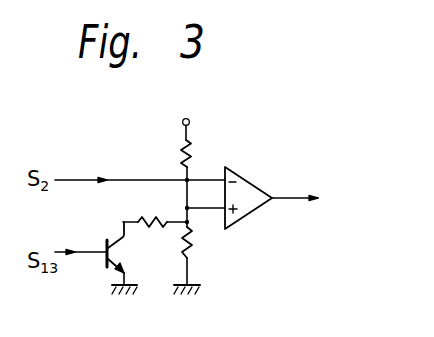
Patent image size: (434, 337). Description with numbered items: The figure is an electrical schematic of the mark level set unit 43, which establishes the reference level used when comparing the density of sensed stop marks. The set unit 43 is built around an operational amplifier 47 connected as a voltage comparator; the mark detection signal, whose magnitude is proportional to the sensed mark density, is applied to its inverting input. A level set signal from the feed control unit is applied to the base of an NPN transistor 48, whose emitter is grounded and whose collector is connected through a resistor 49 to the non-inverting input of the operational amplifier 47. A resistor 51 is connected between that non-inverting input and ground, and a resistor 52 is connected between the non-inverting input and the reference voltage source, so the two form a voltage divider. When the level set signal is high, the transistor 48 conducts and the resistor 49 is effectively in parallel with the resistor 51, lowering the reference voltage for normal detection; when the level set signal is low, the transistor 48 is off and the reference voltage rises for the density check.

The mark level set unit 43 is at (313, 157).
The operational amplifier 47 is at (255, 183).
The NPN transistor 48 is at (103, 267).
The resistor 49 is at (153, 228).
The resistor 51 is at (190, 250).
The resistor 52 is at (193, 152).